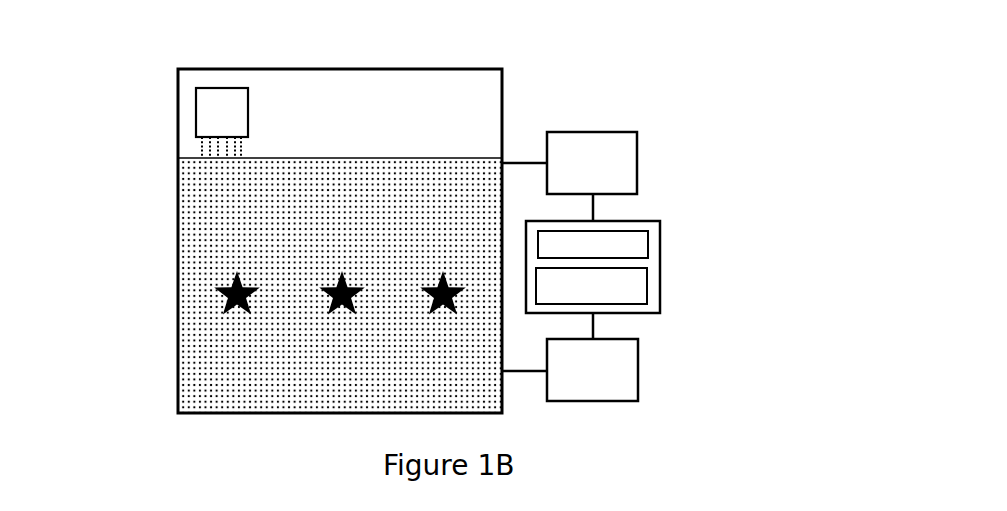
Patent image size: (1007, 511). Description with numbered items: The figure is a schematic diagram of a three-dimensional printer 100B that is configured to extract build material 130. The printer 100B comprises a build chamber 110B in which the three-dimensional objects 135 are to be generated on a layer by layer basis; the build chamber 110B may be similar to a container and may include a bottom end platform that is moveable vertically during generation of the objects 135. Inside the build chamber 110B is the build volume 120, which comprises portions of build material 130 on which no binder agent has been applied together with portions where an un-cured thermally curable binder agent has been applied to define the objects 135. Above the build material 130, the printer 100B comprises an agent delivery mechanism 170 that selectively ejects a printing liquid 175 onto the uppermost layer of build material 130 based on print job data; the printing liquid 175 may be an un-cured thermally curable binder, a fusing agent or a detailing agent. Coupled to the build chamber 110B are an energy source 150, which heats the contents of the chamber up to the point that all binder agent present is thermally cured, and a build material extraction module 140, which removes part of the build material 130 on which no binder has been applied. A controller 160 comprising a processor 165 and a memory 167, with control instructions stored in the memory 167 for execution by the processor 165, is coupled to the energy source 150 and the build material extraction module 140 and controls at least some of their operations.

The 3D printer 100B is at (97, 122).
The build chamber 110B is at (330, 68).
The build volume 120 is at (455, 148).
The build material 130 is at (407, 175).
The 3D objects 135 is at (250, 287).
The agent delivery mechanism 170 is at (222, 112).
The printing liquid 175 is at (243, 147).
The energy source 150 is at (594, 130).
The controller 160 is at (620, 255).
The processor 165 is at (648, 245).
The memory 167 is at (647, 286).
The build material extraction module 140 is at (638, 358).